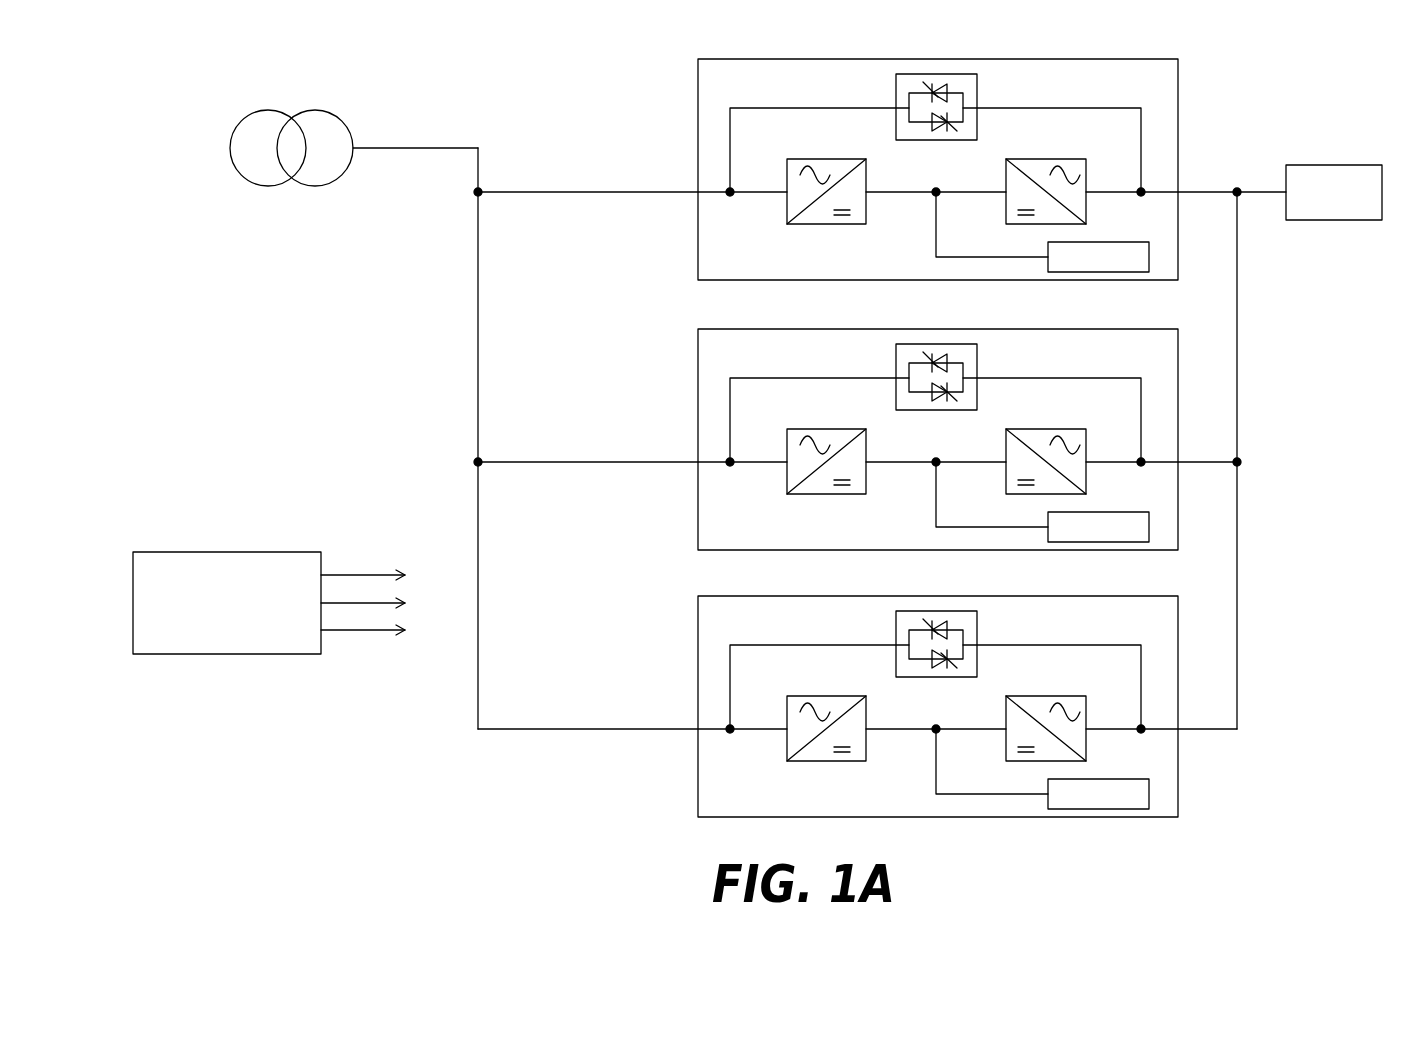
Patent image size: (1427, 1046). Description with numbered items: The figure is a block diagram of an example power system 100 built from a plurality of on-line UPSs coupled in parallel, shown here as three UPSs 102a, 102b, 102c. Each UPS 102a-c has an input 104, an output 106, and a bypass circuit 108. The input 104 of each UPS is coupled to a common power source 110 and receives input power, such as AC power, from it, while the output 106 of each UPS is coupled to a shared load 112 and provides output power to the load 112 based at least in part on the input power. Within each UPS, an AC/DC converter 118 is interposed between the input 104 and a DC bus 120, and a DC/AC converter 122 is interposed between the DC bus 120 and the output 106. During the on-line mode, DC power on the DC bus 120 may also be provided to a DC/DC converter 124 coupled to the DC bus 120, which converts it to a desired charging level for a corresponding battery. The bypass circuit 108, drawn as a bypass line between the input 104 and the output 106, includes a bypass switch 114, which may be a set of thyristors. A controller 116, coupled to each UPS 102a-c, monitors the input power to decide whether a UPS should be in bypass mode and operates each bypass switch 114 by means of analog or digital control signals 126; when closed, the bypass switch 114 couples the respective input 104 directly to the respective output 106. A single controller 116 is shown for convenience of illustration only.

The power system 100 is at (1232, 78).
The UPS 102a is at (697, 78).
The UPS 102b is at (874, 434).
The UPS 102c is at (874, 701).
The input 104 is at (678, 192).
The output 106 is at (1195, 192).
The bypass circuit 108 is at (1008, 107).
The power source 110 is at (322, 110).
The load 112 is at (1327, 165).
The bypass switch 114 is at (922, 75).
The controller 116 is at (267, 552).
The AC/DC converter 118 is at (835, 227).
The DC bus 120 is at (933, 198).
The DC/AC converter 122 is at (1033, 158).
The DC/DC converter 124 is at (1093, 272).
The signals 126 is at (347, 573).